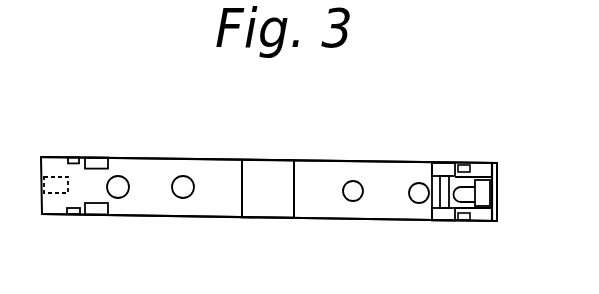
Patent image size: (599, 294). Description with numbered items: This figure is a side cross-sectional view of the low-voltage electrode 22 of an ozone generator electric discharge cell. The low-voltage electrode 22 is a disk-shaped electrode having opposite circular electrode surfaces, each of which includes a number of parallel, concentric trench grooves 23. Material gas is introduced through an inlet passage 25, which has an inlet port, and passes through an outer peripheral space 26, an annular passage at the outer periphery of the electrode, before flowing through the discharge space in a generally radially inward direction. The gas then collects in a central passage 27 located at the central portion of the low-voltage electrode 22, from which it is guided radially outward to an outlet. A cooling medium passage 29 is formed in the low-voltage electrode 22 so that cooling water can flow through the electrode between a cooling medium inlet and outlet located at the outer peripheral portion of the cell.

The low-voltage electrode 22 is at (208, 172).
The trench grooves 23 is at (180, 216).
The inlet passage 25 is at (497, 183).
The outer peripheral space 26 is at (98, 157).
The central passage 27 is at (258, 168).
The cooling medium passage 29 is at (353, 188).